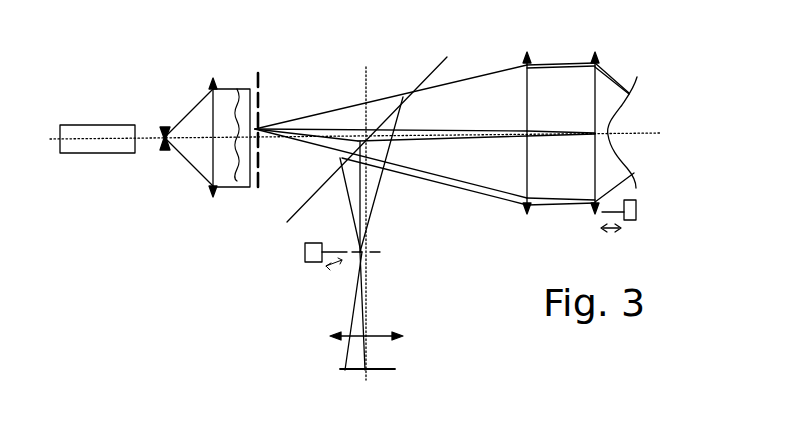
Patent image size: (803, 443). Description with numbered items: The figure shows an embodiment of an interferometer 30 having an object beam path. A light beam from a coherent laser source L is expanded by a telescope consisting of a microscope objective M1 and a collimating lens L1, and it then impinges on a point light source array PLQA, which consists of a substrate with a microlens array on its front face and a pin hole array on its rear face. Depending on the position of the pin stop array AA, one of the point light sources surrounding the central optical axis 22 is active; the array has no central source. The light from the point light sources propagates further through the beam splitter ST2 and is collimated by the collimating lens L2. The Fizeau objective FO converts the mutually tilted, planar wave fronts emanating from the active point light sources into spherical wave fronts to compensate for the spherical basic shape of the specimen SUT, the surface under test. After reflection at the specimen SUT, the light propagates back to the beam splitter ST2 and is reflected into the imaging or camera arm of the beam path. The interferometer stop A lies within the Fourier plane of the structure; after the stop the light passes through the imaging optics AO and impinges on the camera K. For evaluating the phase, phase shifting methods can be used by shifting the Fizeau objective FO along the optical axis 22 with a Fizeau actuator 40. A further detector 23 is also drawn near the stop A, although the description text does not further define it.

The optical axis 22 is at (52, 133).
The detector 23 is at (312, 262).
The interferometer 30 is at (199, 209).
The Fizeau actuator 40 is at (632, 220).
The coherent laser source L is at (97, 130).
The microscope objective M1 is at (166, 124).
The collimating lens L1 is at (191, 144).
The point light source array PLQA is at (235, 121).
The pin stop array AA is at (264, 142).
The beam splitter ST2 is at (377, 129).
The interferometer stop A is at (385, 248).
The imaging optics AO is at (380, 330).
The camera K is at (380, 363).
The collimating lens L2 is at (521, 123).
The Fizeau objective FO is at (590, 123).
The specimen SUT is at (633, 109).